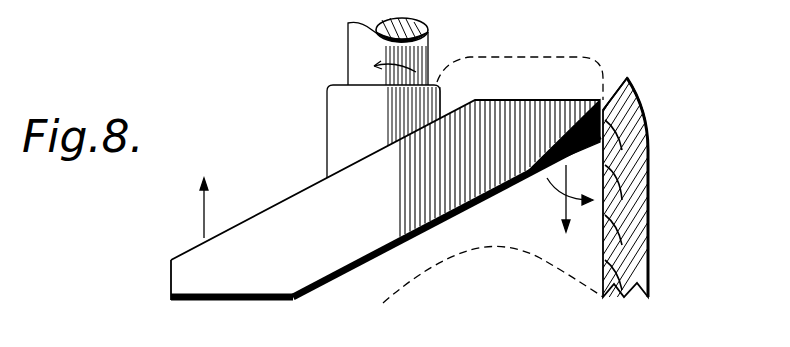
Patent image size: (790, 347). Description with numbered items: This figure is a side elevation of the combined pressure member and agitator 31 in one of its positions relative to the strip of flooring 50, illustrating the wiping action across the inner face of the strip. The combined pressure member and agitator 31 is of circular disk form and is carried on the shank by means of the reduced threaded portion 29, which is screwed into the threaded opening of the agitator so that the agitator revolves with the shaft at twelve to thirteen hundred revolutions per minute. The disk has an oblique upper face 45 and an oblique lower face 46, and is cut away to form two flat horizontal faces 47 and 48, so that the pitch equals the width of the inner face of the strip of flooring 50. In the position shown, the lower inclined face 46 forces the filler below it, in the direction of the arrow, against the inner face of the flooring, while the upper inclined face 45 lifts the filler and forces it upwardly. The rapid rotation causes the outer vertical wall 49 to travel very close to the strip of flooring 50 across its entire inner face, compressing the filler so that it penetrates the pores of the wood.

The reduced threaded portion 29 is at (355, 57).
The combined pressure member and agitator 31 is at (385, 204).
The oblique upper face 45 is at (264, 212).
The oblique lower face 46 is at (420, 233).
The flat horizontal face 47 is at (507, 86).
The flat horizontal face 48 is at (240, 301).
The outer vertical wall 49 is at (596, 120).
The strip of flooring 50 is at (657, 173).